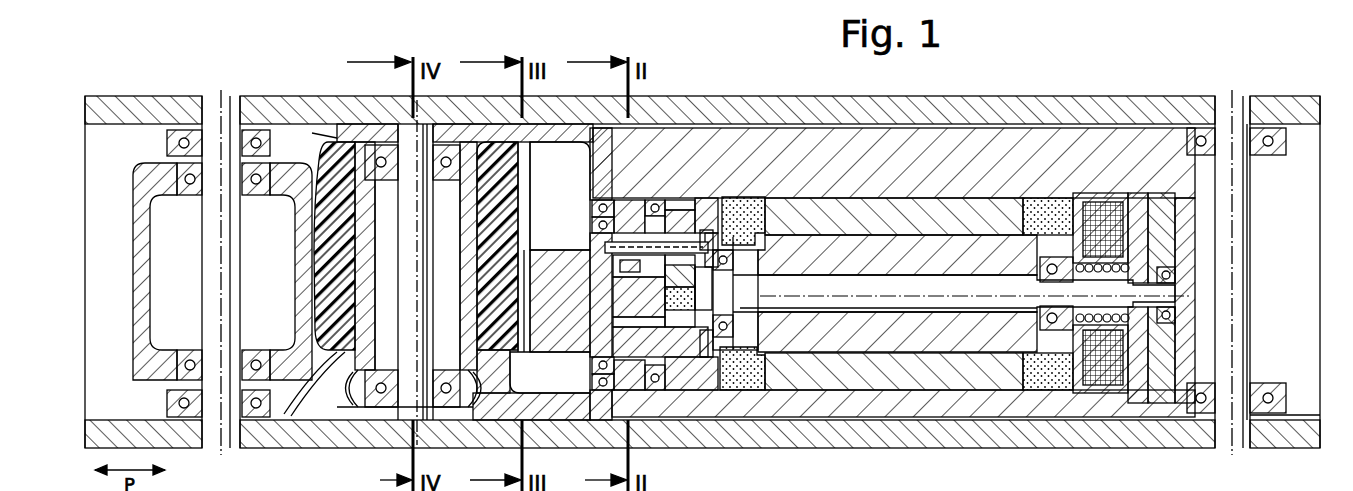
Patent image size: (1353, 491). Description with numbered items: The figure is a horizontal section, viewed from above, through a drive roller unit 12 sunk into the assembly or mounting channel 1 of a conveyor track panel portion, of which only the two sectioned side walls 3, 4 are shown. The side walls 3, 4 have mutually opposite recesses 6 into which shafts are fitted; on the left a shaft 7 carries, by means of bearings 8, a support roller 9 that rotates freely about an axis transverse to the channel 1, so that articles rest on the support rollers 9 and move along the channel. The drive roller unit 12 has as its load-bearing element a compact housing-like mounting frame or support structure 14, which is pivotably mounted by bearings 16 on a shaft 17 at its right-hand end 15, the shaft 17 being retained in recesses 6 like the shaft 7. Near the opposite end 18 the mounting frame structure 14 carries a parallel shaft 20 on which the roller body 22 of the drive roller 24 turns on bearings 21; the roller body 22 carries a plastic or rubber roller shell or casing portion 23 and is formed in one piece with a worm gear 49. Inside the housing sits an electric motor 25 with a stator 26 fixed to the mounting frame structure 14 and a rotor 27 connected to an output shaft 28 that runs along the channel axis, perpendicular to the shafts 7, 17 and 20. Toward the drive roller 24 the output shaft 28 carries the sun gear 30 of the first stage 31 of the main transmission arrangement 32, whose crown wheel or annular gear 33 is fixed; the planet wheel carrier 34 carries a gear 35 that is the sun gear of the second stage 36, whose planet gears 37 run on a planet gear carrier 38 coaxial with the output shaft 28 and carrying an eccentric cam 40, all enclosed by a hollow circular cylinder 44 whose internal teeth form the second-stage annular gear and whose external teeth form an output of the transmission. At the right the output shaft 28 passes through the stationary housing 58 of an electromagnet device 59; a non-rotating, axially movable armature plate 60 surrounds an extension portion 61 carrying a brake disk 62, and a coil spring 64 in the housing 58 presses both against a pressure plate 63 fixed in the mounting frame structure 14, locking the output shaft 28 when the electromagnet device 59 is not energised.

The assembly or mounting channel 1 is at (117, 240).
The side wall 3 is at (1007, 106).
The side wall 4 is at (1007, 433).
The recesses 6 is at (205, 106).
The shaft 7 is at (232, 282).
The bearings 8 is at (190, 188).
The support roller 9 is at (130, 352).
The drive roller unit 12 is at (905, 418).
The mounting frame or support structure 14 is at (938, 145).
The end 15 is at (1280, 260).
The bearings 16 is at (1267, 155).
The shaft 17 is at (1243, 206).
The end 18 is at (350, 397).
The shaft 20 is at (378, 420).
The bearings 21 is at (372, 127).
The roller body 22 is at (470, 192).
The roller shell or casing portion 23 is at (517, 238).
The drive roller 24 is at (513, 166).
The electric motor 25 is at (950, 360).
The stator 26 is at (863, 378).
The rotor 27 is at (812, 250).
The output shaft 28 is at (813, 300).
The sun gear 30 is at (730, 198).
The first stage 31 is at (688, 200).
The main transmission arrangement 32 is at (732, 53).
The crown wheel or annular gear 33 is at (722, 340).
The planet wheel carrier 34 is at (683, 350).
The gear 35 is at (648, 360).
The second stage 36 is at (633, 200).
The planet gears 37 is at (592, 232).
The planet gear carrier 38 is at (598, 412).
The cam 40 is at (552, 328).
The hollow circular cylinder 44 is at (600, 130).
The worm gear 49 is at (490, 395).
The housing 58 is at (1100, 385).
The electromagnet device 59 is at (1100, 210).
The armature plate 60 is at (1160, 197).
The extension portion 61 is at (1165, 292).
The brake disk 62 is at (1147, 385).
The pressure plate 63 is at (1183, 403).
The coil spring 64 is at (1170, 266).